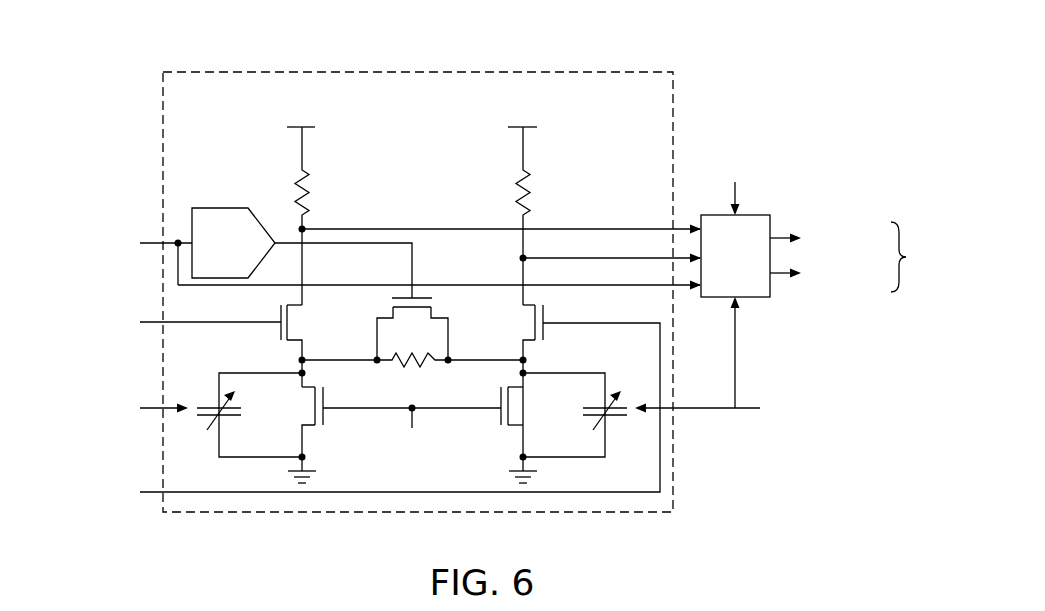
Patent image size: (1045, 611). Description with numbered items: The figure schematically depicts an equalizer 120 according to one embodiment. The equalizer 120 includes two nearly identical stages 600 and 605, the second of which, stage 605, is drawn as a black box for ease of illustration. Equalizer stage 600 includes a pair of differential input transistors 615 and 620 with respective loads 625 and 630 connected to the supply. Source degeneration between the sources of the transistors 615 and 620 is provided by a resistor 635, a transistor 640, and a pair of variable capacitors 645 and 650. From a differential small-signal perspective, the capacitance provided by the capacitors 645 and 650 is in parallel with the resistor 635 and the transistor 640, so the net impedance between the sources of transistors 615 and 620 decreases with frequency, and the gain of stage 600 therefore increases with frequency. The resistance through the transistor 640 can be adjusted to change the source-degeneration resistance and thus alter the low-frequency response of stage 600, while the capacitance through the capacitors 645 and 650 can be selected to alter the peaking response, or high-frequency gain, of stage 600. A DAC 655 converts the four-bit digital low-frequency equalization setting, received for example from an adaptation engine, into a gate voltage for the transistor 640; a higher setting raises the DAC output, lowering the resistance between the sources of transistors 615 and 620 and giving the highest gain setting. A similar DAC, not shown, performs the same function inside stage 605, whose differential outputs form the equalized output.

The equalizer 120 is at (740, 42).
The equalizer stage 600 is at (437, 97).
The equalizer stage 605 is at (717, 272).
The differential input transistor 615 is at (293, 340).
The differential input transistor 620 is at (545, 313).
The load 625 is at (310, 186).
The load 630 is at (514, 187).
The resistor 635 is at (410, 368).
The transistor 640 is at (432, 311).
The variable capacitor 645 is at (226, 412).
The variable capacitor 650 is at (596, 406).
The DAC 655 is at (232, 267).